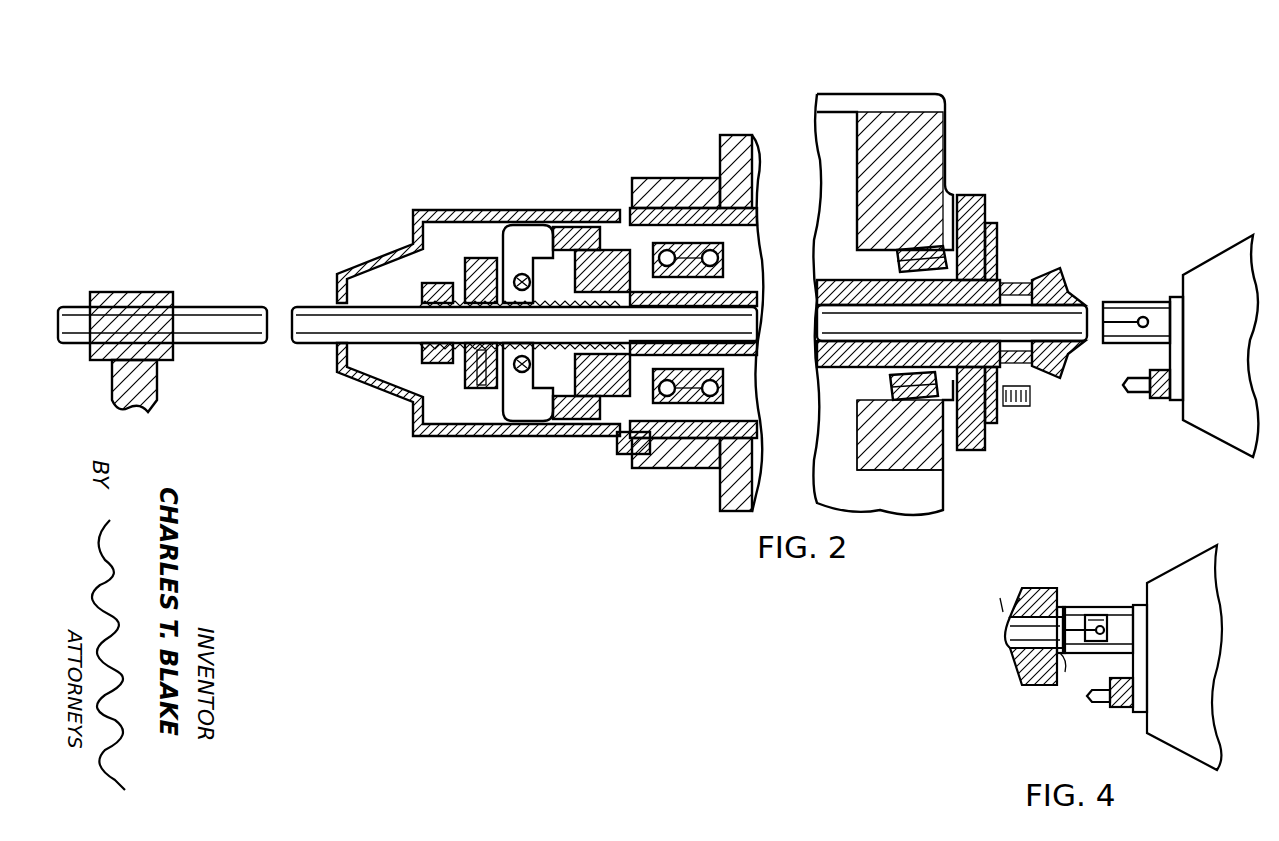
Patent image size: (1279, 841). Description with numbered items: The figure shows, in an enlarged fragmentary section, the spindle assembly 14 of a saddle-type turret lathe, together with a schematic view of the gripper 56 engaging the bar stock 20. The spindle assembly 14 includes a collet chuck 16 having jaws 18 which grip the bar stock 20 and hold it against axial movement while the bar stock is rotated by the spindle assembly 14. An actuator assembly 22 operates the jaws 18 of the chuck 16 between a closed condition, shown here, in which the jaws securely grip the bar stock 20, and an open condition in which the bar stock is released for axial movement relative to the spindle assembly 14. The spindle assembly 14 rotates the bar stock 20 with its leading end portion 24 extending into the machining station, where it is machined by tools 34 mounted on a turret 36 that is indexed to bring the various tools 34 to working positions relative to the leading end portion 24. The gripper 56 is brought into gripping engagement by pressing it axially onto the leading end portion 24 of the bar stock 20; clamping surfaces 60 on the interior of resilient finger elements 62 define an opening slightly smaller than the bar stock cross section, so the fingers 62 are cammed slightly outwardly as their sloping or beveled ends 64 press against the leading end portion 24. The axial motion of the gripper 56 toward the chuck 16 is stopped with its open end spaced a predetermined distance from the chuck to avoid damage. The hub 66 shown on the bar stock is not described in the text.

In FIG. 2, the spindle assembly 14 is at (950, 82).
In FIG. 4, the spindle assembly 14 is at (998, 590).
In FIG. 2, the collet chuck 16 is at (1078, 192).
In FIG. 4, the collet chuck 16 is at (1010, 585).
In FIG. 2, the jaws 18 is at (1055, 290).
In FIG. 4, the jaws 18 is at (1058, 595).
In FIG. 2, the bar stock 20 is at (301, 305).
In FIG. 4, the bar stock 20 is at (1000, 640).
In FIG. 2, the actuator assembly 22 is at (593, 240).
In FIG. 2, the leading end portion 24 is at (1072, 300).
In FIG. 4, the leading end portion 24 is at (1082, 678).
In FIG. 2, the tools 34 is at (1126, 386).
In FIG. 4, the tools 34 is at (1095, 700).
In FIG. 2, the turret 36 is at (1210, 412).
In FIG. 4, the turret 36 is at (1185, 740).
In FIG. 2, the gripper 56 is at (1145, 300).
In FIG. 4, the gripper 56 is at (1125, 600).
In FIG. 4, the clamping surfaces 60 is at (1085, 632).
In FIG. 2, the resilient finger elements 62 is at (1108, 302).
In FIG. 4, the resilient finger elements 62 is at (1100, 607).
In FIG. 4, the beveled ends 64 is at (1068, 607).
In FIG. 2, the hub 66 is at (162, 386).